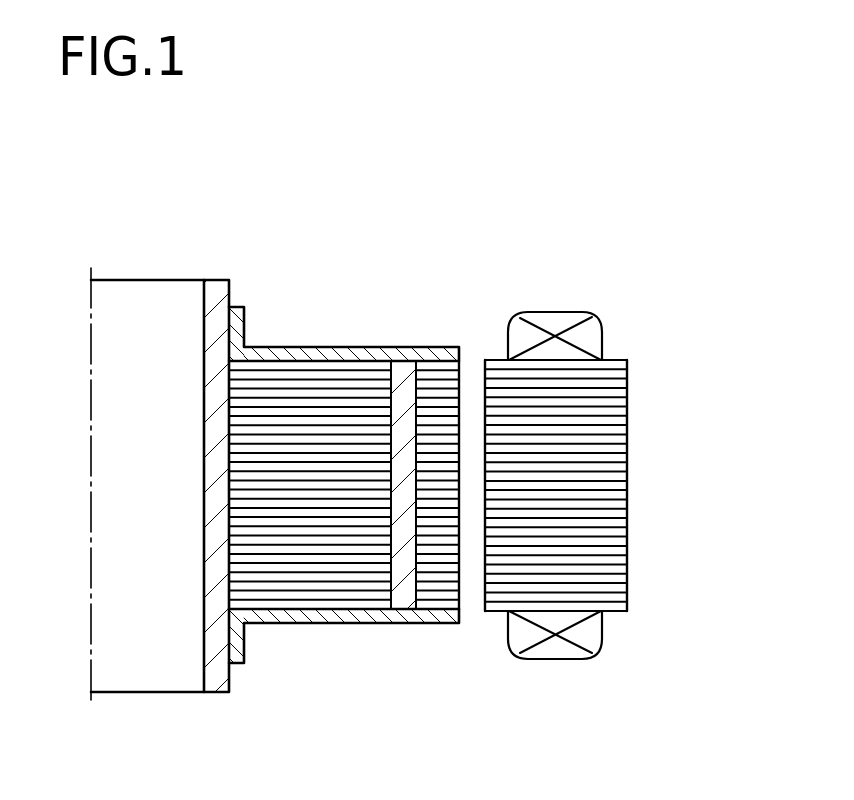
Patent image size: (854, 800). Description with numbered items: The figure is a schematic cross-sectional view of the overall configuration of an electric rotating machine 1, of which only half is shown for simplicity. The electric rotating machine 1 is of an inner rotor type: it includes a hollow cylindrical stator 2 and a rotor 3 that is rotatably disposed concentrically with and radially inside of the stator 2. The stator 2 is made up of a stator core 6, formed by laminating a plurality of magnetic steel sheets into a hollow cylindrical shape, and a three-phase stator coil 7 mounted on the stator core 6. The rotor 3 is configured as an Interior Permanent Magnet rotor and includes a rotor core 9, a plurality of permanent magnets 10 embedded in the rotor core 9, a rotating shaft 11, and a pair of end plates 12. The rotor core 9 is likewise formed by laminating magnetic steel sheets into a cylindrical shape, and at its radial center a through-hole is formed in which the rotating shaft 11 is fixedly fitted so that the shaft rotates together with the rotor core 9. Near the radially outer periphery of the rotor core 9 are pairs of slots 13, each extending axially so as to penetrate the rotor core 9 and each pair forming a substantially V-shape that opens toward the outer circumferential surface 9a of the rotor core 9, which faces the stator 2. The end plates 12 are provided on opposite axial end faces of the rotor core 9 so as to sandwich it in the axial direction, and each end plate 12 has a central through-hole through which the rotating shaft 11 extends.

The electric rotating machine 1 is at (405, 413).
The stator 2 is at (602, 461).
The rotor 3 is at (383, 359).
The stator core 6 is at (612, 402).
The stator coil 7 is at (572, 320).
The rotor core 9 is at (464, 493).
The outer circumferential surface 9a is at (460, 578).
The permanent magnets 10 is at (404, 582).
The rotating shaft 11 is at (213, 292).
The end plates 12 is at (338, 350).
The slots 13 is at (402, 560).